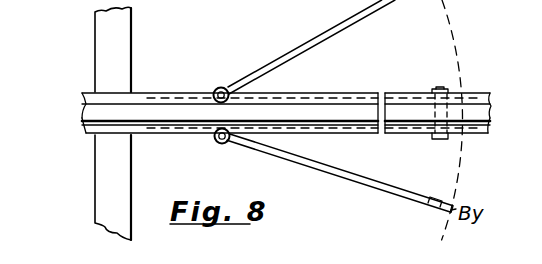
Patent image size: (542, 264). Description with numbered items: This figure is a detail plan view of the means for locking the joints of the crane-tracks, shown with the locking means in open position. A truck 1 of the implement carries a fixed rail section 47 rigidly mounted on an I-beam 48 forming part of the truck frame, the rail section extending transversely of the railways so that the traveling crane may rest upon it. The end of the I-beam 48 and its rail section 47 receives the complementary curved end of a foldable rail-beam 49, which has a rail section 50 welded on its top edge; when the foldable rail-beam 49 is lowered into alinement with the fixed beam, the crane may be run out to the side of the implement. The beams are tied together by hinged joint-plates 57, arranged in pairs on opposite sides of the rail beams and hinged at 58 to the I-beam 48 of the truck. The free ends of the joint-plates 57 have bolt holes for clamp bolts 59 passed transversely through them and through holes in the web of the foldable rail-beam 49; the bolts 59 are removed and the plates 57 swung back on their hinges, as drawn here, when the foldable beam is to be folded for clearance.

The truck 1 is at (115, 187).
The fixed rail section 47 is at (155, 113).
The I-beam 48 is at (133, 128).
The foldable rail-beam 49 is at (480, 98).
The rail section 50 is at (473, 118).
The hinged joint-plate 57 is at (362, 17).
The hinge 58 is at (228, 87).
The clamp bolt 59 is at (441, 140).